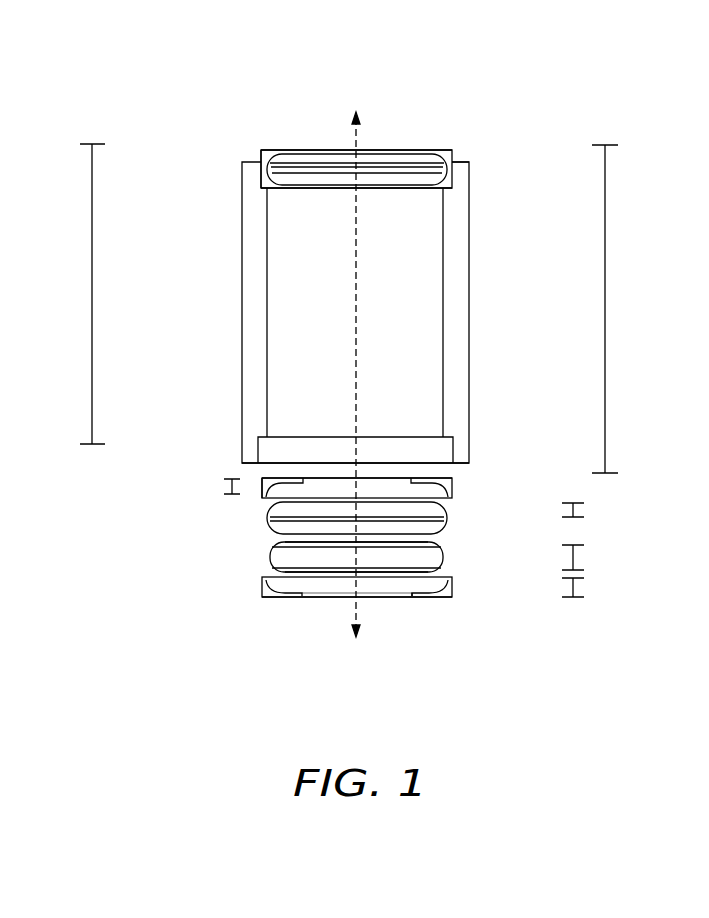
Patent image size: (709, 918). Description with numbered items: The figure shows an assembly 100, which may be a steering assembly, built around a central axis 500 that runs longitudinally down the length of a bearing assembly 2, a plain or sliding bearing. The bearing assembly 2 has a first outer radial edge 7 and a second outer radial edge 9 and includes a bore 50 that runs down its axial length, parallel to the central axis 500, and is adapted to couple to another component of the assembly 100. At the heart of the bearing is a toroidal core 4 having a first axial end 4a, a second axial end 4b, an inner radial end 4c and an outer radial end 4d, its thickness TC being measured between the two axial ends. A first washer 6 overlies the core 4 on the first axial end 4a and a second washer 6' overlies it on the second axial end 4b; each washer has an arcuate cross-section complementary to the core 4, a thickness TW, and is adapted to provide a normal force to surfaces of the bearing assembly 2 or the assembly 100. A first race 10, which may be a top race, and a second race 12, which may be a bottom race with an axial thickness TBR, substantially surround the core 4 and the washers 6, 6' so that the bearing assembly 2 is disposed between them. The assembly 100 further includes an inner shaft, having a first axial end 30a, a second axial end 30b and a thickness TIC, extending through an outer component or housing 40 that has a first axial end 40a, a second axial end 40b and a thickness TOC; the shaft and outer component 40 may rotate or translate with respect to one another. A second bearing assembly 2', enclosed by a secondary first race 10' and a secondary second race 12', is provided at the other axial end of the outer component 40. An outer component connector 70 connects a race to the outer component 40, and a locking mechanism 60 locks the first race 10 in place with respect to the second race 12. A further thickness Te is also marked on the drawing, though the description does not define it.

The assembly 100 is at (567, 90).
The outer component 40 is at (470, 335).
The first axial end of outer component 40a is at (460, 163).
The second axial end of outer component 40b is at (456, 458).
The outer component connector 70 is at (258, 452).
The first axial end of shaft 30a is at (400, 150).
The secondary first race 10' is at (393, 129).
The secondary second race 12' is at (394, 206).
The second bearing assembly 2' is at (409, 157).
The central axis 500 is at (295, 300).
The washer 6 is at (377, 493).
The first race 10 is at (387, 465).
The bearing assembly 2 is at (407, 484).
The first outer radial end 7 is at (267, 508).
The second outer radial end 9 is at (450, 518).
The second washer 6' is at (382, 532).
The core 4 is at (270, 585).
The first axial end of core 4a is at (445, 545).
The second axial end of core 4b is at (445, 580).
The inner radial end of core 4c is at (275, 540).
The outer radial end of core 4d is at (445, 567).
The second race 12 is at (399, 614).
The second axial end of shaft 30b is at (302, 598).
The bore 50 is at (378, 603).
The locking mechanism 60 is at (445, 598).
The shaft thickness TIC is at (109, 294).
The outer component thickness TOC is at (623, 309).
The plate thickness Te is at (222, 481).
The washer thickness TW is at (588, 511).
The core thickness TC is at (588, 556).
The second race axial thickness TBR is at (588, 592).